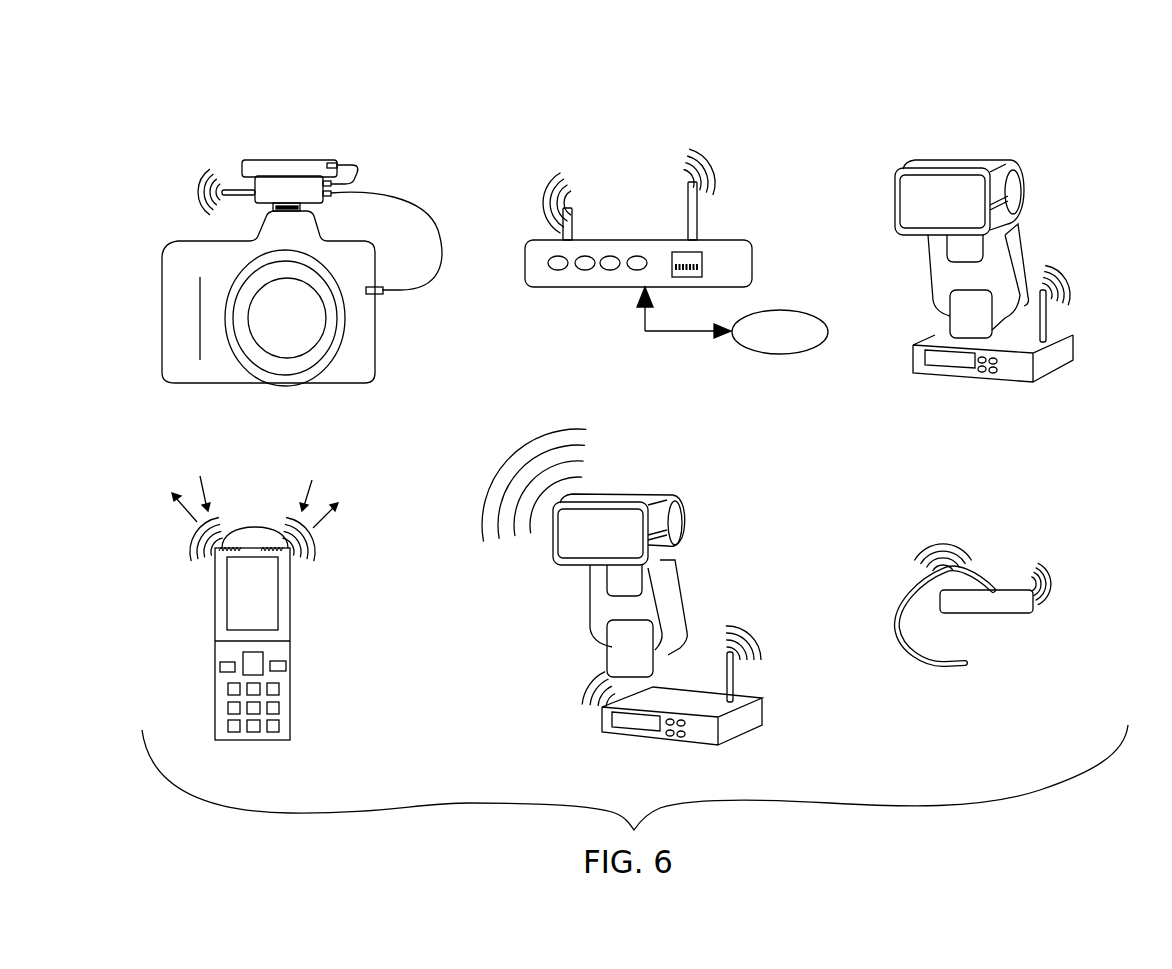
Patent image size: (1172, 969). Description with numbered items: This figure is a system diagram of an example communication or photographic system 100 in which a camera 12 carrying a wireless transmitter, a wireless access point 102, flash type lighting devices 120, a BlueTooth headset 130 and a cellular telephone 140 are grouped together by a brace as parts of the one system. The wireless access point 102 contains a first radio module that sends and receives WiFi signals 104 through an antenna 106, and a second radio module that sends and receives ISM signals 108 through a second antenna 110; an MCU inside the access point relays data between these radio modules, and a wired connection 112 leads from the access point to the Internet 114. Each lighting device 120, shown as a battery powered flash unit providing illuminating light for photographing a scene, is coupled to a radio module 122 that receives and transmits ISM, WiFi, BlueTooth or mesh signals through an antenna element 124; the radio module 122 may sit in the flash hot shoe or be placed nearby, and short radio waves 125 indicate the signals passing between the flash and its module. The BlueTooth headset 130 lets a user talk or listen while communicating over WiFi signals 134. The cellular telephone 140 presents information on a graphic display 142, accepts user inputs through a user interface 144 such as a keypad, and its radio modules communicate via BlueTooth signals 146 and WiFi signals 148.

The communication system 100 is at (150, 126).
The camera with wireless transmitter 12 is at (375, 351).
The wireless access point 102 is at (577, 288).
The WiFi signals 104 is at (540, 190).
The antenna 106 is at (578, 222).
The ISM signals 108 is at (705, 152).
The antenna 110 is at (698, 228).
The wired connection 112 is at (672, 332).
The Internet 114 is at (790, 353).
The lighting device 120 is at (1026, 247).
The radio module 122 is at (1075, 356).
The antenna element 124 is at (1048, 311).
The wireless signal 125 is at (590, 683).
The BlueTooth headset 130 is at (1002, 614).
The WiFi signals 134 is at (931, 546).
The cellular telephone 140 is at (291, 668).
The graphic display 142 is at (279, 577).
The user interface 144 is at (276, 726).
The BlueTooth signals 146 is at (222, 514).
The WiFi signals 148 is at (284, 514).